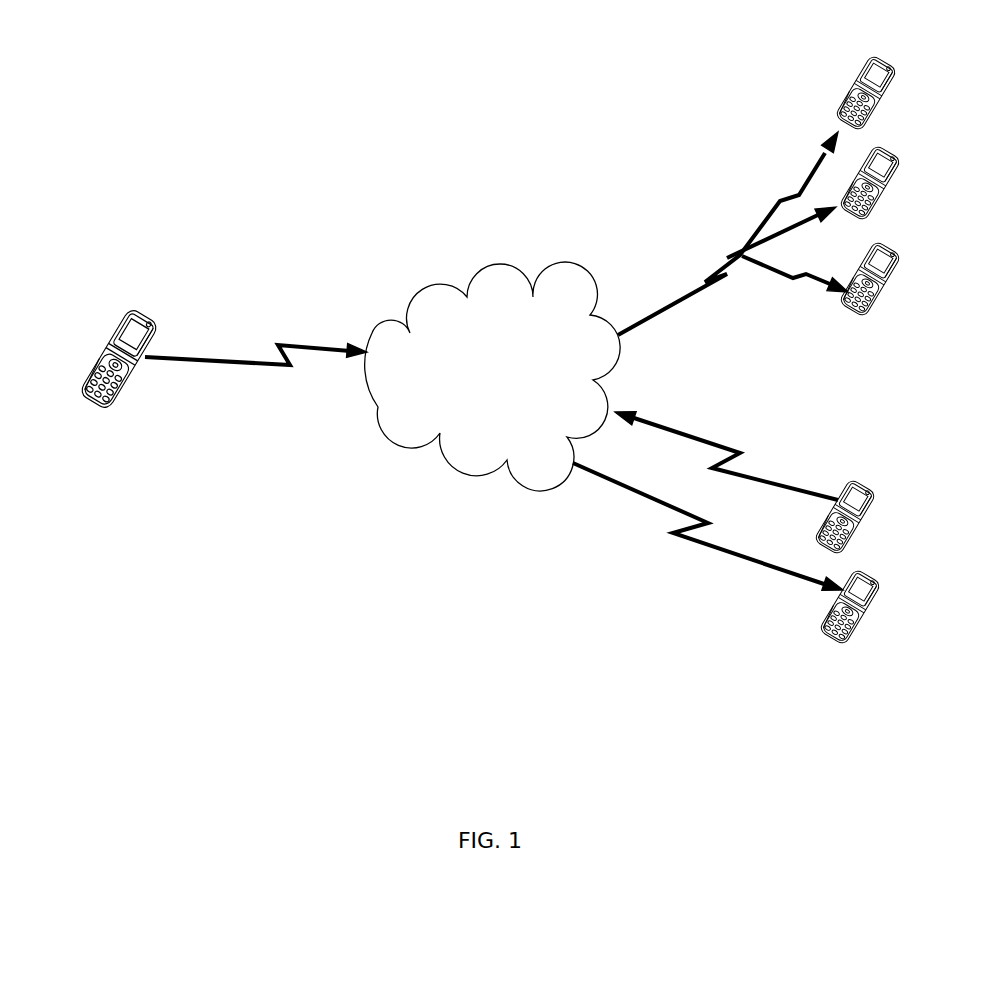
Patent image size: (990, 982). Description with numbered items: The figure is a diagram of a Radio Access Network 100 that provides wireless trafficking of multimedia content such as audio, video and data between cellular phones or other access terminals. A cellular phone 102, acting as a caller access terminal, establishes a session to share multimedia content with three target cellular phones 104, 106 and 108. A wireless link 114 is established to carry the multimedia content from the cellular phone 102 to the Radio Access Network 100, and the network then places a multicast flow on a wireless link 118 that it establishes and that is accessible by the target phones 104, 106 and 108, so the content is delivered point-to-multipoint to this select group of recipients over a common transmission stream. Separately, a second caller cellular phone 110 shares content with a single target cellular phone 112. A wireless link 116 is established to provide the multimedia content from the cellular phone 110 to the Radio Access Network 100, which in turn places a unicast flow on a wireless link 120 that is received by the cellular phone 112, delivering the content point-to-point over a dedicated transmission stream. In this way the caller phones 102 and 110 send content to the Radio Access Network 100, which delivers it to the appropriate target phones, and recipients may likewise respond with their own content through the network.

The Radio Access Network 100 is at (567, 265).
The cellular phone 102 is at (93, 412).
The cellular phone 104 is at (890, 102).
The cellular phone 106 is at (892, 190).
The cellular phone 108 is at (890, 290).
The cellular phone 110 is at (863, 520).
The cellular phone 112 is at (862, 615).
The wireless link 114 is at (300, 343).
The wireless link 116 is at (713, 445).
The wireless link 118 is at (686, 296).
The wireless link 120 is at (650, 503).